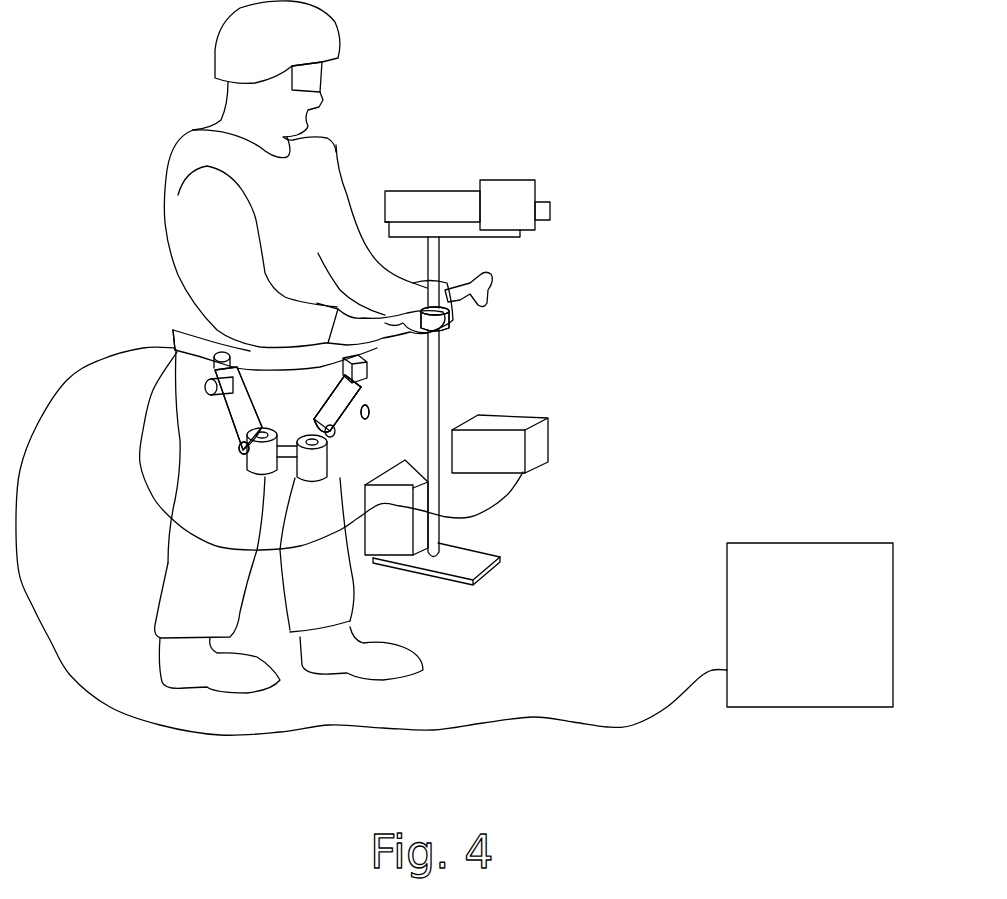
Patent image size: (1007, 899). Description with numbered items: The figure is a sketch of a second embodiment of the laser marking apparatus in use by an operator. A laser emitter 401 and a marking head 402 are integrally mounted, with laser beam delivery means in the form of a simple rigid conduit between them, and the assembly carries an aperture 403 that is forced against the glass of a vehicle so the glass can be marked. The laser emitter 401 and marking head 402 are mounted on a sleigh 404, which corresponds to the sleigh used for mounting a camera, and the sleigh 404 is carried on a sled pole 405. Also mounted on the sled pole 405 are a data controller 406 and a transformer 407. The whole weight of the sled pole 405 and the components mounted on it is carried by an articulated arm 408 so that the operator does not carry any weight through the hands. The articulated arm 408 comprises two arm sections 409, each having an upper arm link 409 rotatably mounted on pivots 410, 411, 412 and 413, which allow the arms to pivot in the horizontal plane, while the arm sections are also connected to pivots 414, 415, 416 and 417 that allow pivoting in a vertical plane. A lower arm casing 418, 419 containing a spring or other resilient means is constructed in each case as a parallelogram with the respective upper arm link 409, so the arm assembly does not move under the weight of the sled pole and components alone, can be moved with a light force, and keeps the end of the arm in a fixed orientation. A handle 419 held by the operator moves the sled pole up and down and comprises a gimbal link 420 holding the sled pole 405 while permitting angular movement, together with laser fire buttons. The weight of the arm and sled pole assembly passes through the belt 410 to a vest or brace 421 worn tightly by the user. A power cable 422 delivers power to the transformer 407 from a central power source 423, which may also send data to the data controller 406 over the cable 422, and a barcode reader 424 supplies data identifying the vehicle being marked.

The laser emitter 401 is at (423, 197).
The marking head 402 is at (508, 190).
The aperture 403 is at (545, 200).
The sleigh 404 is at (523, 237).
The sled pole 405 is at (437, 355).
The data controller 406 is at (403, 537).
The transformer 407 is at (533, 445).
The articulated arm 408 is at (221, 435).
The arm section 409 is at (210, 399).
The belt 410 is at (173, 330).
The pivot 411 is at (255, 465).
The pivot 412 is at (305, 475).
The pivot 413 is at (370, 410).
The pivot 414 is at (198, 310).
The pivot 415 is at (287, 407).
The pivot 416 is at (365, 483).
The pivot 417 is at (363, 402).
The lower arm casing 418 is at (332, 420).
The handle 419 is at (440, 337).
The gimbal link 420 is at (457, 323).
The vest or brace 421 is at (197, 153).
The power cable 422 is at (135, 715).
The central power source 423 is at (745, 590).
The barcode reader 424 is at (487, 280).